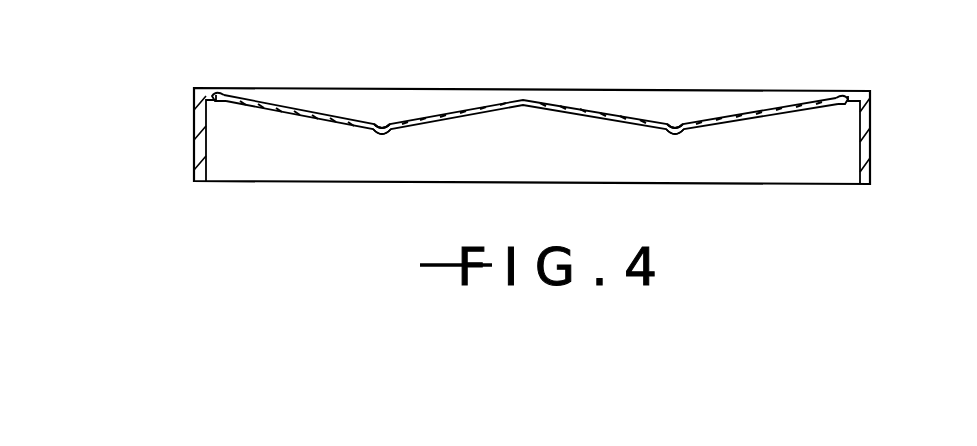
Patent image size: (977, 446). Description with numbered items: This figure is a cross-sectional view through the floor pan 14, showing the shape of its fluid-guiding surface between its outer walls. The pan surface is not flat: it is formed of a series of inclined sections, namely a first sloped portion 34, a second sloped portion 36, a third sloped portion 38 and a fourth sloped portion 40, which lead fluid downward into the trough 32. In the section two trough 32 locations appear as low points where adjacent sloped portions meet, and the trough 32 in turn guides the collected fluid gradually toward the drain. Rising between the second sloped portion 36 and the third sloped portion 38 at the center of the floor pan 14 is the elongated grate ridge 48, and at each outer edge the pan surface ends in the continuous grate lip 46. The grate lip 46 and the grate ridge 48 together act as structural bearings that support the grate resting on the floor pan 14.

The floor pan 14 is at (871, 130).
The trough 32 is at (382, 125).
The first sloped portion 34 is at (303, 110).
The second sloped portion 36 is at (443, 110).
The third sloped portion 38 is at (610, 107).
The fourth sloped portion 40 is at (747, 103).
The grate lip 46 is at (234, 97).
The grate ridge 48 is at (525, 100).